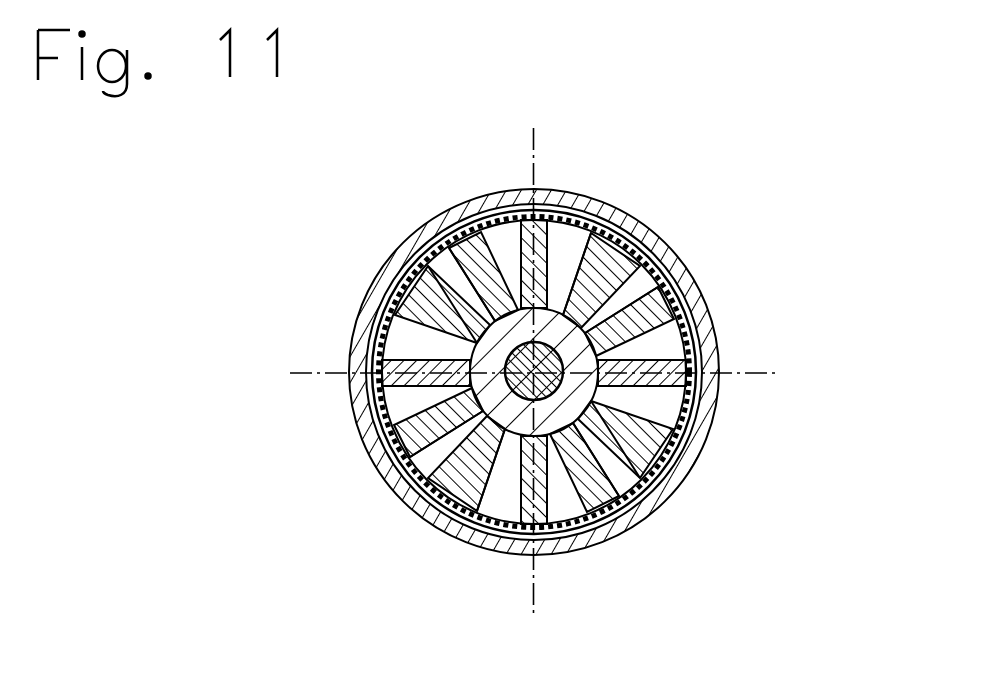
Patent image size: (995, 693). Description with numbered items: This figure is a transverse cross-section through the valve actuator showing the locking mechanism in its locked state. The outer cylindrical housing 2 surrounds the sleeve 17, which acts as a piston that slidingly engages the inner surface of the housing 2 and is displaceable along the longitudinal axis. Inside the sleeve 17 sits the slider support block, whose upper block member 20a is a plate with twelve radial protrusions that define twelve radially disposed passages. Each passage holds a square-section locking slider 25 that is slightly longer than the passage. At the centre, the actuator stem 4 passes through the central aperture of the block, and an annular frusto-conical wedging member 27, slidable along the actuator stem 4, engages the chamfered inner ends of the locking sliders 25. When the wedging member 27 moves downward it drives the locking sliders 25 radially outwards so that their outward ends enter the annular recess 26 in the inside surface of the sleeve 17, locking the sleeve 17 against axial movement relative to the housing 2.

The housing 2 is at (616, 372).
The sleeve 17 is at (641, 372).
The annular recess 26 is at (646, 433).
The conical wedging member 27 is at (385, 345).
The actuator stem 4 is at (375, 358).
The locking slider 25 is at (652, 372).
The upper block member 20a is at (400, 354).